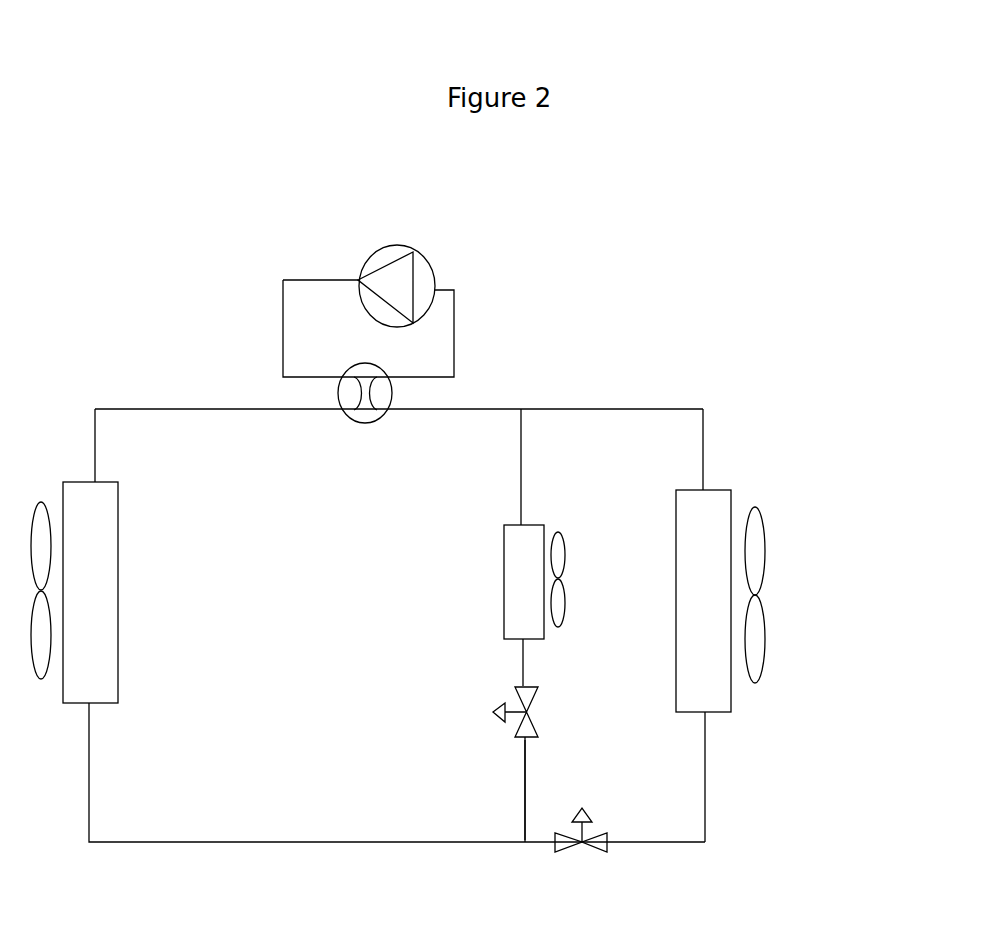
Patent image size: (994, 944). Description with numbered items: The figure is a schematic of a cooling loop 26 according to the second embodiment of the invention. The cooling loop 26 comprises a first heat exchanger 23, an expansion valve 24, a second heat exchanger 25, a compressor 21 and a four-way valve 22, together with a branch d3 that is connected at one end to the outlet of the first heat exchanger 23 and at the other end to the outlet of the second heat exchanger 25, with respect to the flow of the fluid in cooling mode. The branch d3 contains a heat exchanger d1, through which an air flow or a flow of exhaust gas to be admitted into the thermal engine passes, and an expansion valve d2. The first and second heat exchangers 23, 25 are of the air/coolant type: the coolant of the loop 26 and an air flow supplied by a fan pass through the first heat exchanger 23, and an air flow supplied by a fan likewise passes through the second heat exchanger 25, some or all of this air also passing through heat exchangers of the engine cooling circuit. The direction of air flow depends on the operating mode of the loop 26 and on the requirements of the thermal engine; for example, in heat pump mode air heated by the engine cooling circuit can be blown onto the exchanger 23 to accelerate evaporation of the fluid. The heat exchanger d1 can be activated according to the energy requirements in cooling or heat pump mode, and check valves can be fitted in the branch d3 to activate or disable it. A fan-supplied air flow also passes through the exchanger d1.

The compressor 21 is at (457, 256).
The four-way valve 22 is at (388, 441).
The first heat exchanger 23 is at (140, 709).
The expansion valve 24 is at (618, 869).
The second heat exchanger 25 is at (750, 710).
The cooling loop 26 is at (614, 390).
The heat exchanger d1 is at (555, 507).
The expansion valve d2 is at (550, 702).
The branch d3 is at (504, 793).